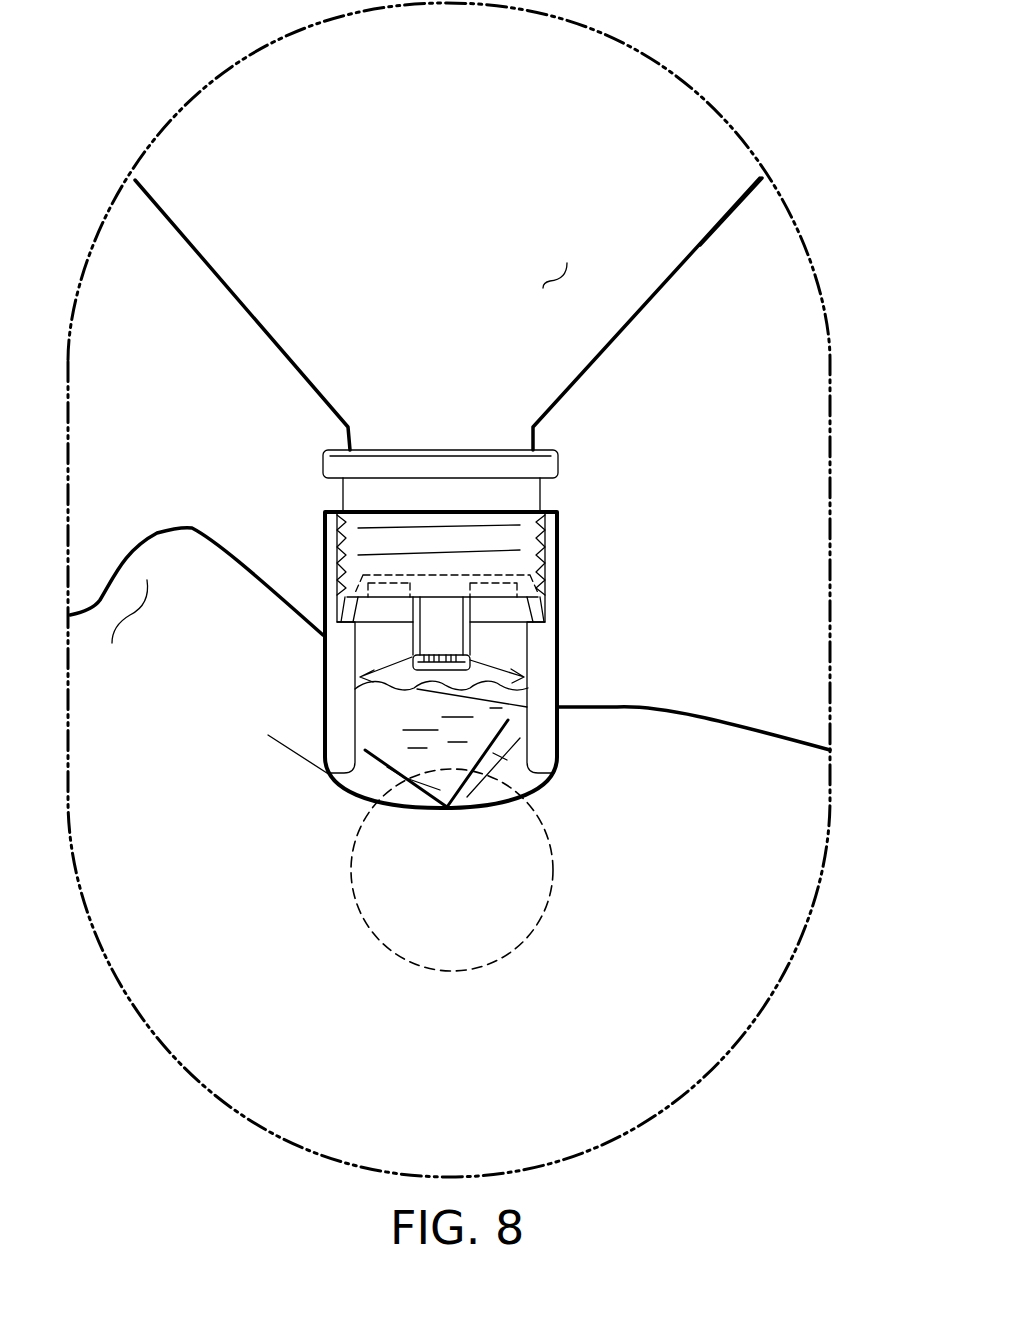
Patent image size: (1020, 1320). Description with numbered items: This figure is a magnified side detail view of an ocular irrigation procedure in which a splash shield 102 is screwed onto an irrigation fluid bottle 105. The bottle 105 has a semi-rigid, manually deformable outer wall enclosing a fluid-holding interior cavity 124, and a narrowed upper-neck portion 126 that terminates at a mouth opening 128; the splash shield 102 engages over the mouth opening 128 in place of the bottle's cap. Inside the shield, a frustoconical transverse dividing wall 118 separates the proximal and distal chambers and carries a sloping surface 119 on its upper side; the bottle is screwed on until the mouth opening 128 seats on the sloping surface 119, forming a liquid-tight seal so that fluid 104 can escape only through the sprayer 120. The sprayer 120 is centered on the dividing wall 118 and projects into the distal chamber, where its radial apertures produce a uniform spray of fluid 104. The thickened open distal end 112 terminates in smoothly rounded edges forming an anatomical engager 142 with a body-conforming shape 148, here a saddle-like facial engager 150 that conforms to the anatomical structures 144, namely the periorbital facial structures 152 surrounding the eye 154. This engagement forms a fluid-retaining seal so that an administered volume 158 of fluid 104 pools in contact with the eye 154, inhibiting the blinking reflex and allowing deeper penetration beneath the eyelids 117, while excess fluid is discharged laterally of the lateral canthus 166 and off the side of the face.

The splash shield 102 is at (564, 563).
The fluid 104 is at (552, 347).
The fluid bottle 105 is at (570, 387).
The open distal end 112 is at (559, 748).
The eyelids 117 is at (468, 797).
The transverse dividing wall 118 is at (548, 548).
The sloping surface 119 is at (545, 605).
The sprayer 120 is at (413, 645).
The fluid-holding interior cavity 124 is at (560, 281).
The upper-neck portion 126 is at (350, 443).
The mouth opening 128 is at (390, 597).
The anatomical engager 142 is at (387, 768).
The anatomical structures 144 is at (313, 760).
The body-conforming shape 148 is at (562, 775).
The facial engager 150 is at (553, 784).
The periorbital facial structures 152 is at (340, 777).
The eye 154 is at (555, 873).
The administered volume 158 is at (527, 677).
The lateral canthus 166 is at (473, 773).